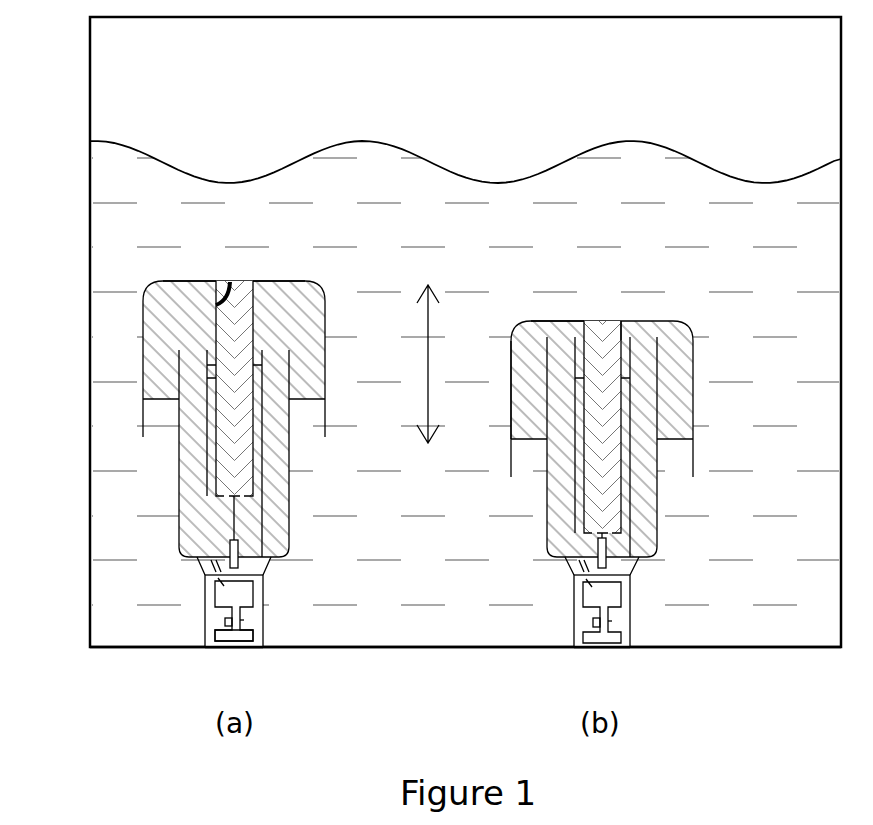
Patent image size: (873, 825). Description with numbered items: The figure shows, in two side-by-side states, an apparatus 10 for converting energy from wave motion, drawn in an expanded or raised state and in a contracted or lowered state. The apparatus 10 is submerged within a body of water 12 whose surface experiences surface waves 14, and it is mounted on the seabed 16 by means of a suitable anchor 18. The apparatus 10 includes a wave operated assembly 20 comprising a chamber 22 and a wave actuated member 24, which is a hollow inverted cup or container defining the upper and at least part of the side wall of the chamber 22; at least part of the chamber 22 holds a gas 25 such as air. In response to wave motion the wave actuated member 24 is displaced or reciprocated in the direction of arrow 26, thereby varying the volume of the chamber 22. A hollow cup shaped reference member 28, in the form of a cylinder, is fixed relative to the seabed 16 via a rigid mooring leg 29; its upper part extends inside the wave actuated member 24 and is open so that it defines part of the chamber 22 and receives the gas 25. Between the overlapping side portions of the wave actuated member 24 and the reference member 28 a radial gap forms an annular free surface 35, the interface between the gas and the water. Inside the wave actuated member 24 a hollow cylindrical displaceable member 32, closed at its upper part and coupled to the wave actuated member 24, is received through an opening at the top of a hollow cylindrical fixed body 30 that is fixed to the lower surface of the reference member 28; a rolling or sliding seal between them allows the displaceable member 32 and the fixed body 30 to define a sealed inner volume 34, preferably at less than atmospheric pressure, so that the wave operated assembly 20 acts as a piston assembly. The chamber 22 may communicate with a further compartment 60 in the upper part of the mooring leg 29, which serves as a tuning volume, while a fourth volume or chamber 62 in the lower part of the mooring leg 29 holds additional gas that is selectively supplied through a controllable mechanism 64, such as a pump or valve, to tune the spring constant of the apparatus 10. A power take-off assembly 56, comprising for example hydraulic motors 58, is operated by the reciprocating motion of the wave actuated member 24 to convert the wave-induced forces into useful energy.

The apparatus 10 is at (120, 322).
The body of water 12 is at (412, 205).
The surface waves 14 is at (600, 141).
The seabed 16 is at (430, 648).
The anchor 18 is at (224, 648).
The wave operated assembly 20 is at (320, 300).
The chamber 22 is at (310, 352).
The wave actuated member 24 is at (183, 281).
The gas 25 is at (277, 281).
The arrow 26 is at (428, 397).
The reference member 28 is at (292, 482).
The mooring leg 29 is at (268, 633).
The fixed body 30 is at (204, 520).
The displaceable member 32 is at (228, 281).
The sealed inner volume 34 is at (240, 428).
The annular free surface 35 is at (160, 432).
The power take-off assembly 56 is at (243, 561).
The hydraulic motors 58 is at (243, 561).
The further compartment 60 is at (222, 594).
The fourth volume or chamber 62 is at (225, 633).
The controllable mechanism 64 is at (244, 621).